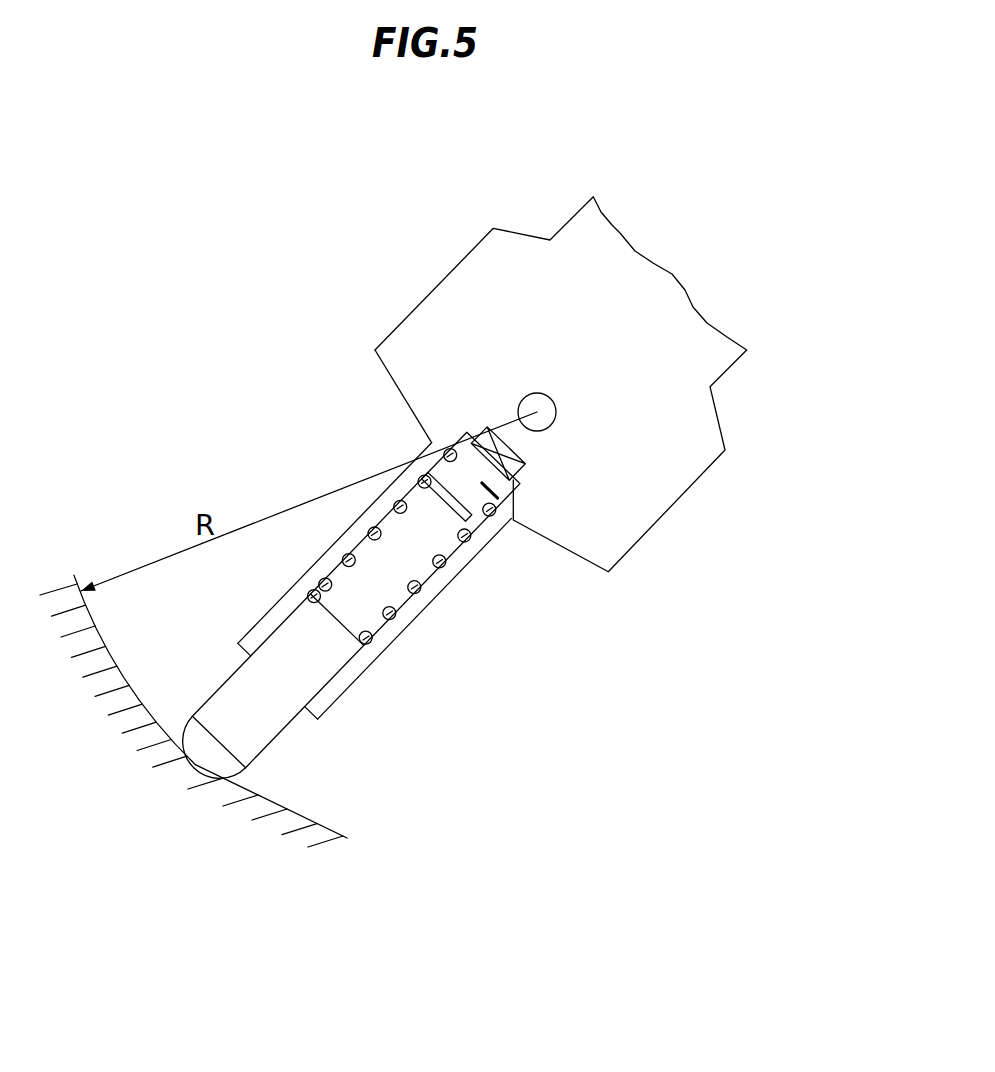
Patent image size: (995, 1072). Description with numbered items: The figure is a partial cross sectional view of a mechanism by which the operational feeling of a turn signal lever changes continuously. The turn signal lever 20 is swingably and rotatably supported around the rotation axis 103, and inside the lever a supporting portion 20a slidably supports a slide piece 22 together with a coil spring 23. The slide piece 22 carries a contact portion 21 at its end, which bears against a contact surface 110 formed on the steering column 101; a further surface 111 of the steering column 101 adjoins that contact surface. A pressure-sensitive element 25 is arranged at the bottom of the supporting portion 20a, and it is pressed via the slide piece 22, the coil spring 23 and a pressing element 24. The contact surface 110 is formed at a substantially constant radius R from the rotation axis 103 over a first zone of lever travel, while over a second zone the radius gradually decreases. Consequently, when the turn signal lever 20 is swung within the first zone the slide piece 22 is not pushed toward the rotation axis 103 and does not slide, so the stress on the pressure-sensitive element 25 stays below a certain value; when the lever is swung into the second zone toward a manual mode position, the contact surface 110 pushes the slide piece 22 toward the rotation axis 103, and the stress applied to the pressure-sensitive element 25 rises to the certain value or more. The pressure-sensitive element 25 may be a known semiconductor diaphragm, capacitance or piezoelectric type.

The turn signal lever 20 is at (594, 220).
The supporting portion 20a is at (323, 562).
The contact portion 21 is at (190, 753).
The slide piece 22 is at (314, 617).
The coil spring 23 is at (442, 563).
The pressing element 24 is at (498, 500).
The pressure-sensitive element 25 is at (524, 465).
The steering column 101 is at (265, 707).
The rotation axis 103 is at (536, 393).
The contact surface 110 is at (78, 577).
The flat surface of steering column 111 is at (310, 818).